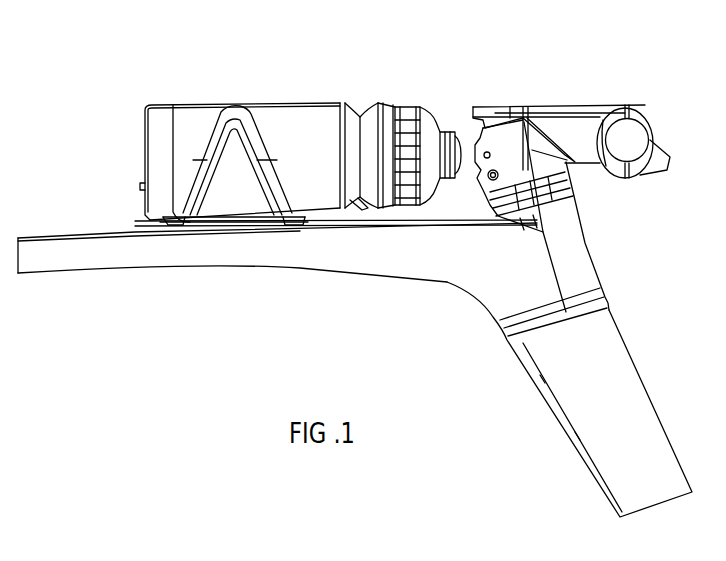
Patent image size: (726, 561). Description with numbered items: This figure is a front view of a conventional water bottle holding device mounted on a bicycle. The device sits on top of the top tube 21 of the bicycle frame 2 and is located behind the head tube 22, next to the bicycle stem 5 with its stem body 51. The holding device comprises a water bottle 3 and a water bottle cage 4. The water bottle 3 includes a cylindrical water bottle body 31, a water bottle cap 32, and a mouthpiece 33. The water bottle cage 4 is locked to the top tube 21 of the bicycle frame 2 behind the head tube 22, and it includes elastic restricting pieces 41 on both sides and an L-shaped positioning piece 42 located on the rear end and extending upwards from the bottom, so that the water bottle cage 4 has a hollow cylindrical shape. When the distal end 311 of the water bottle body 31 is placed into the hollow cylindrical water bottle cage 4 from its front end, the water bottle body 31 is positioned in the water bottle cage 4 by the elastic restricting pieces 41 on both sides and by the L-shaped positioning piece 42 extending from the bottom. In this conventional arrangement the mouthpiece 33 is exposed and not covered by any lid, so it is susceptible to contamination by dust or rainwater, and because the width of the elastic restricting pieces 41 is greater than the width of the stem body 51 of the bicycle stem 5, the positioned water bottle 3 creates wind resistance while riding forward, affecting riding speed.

The bicycle frame 2 is at (355, 319).
The top tube 21 is at (42, 262).
The head tube 22 is at (560, 197).
The water bottle 3 is at (261, 125).
The water bottle body 31 is at (232, 130).
The distal end 311 is at (145, 137).
The water bottle cap 32 is at (408, 107).
The mouthpiece 33 is at (453, 136).
The water bottle cage 4 is at (360, 210).
The elastic restricting pieces 41 is at (230, 120).
The L-shaped positioning piece 42 is at (140, 187).
The bicycle stem 5 is at (574, 137).
The stem body 51 is at (572, 102).